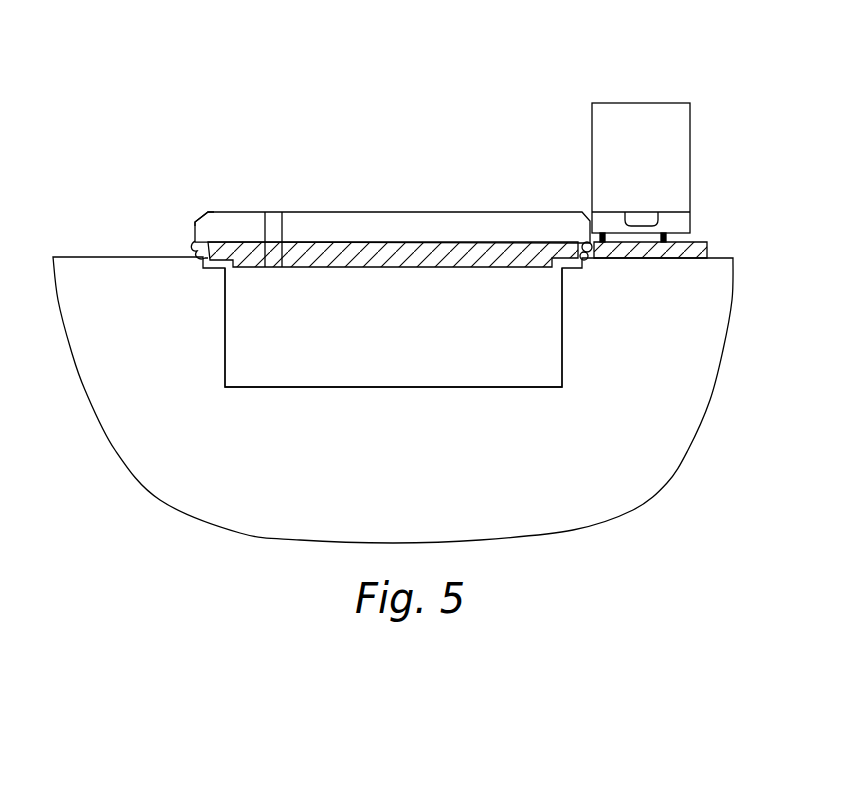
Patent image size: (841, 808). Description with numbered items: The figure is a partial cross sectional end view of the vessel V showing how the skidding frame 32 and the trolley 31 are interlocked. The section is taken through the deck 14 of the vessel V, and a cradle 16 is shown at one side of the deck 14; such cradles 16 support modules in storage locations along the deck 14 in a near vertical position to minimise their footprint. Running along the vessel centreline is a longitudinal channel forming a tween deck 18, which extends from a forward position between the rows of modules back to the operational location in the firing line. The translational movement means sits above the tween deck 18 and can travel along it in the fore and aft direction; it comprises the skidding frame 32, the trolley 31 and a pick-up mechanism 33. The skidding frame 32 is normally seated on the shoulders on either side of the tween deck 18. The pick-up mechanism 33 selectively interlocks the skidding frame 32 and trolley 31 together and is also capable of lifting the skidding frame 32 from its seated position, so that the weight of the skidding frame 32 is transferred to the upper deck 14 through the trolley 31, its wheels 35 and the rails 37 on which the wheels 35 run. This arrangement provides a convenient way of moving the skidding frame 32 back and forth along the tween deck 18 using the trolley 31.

The deck 14 is at (157, 324).
The cradle 16 is at (635, 135).
The tween deck 18 is at (343, 368).
The trolley 31 is at (323, 227).
The skidding frame 32 is at (383, 252).
The pick-up mechanism 33 is at (282, 225).
The wheels 35 is at (203, 228).
The rails 37 is at (195, 242).
The vessel V is at (617, 468).